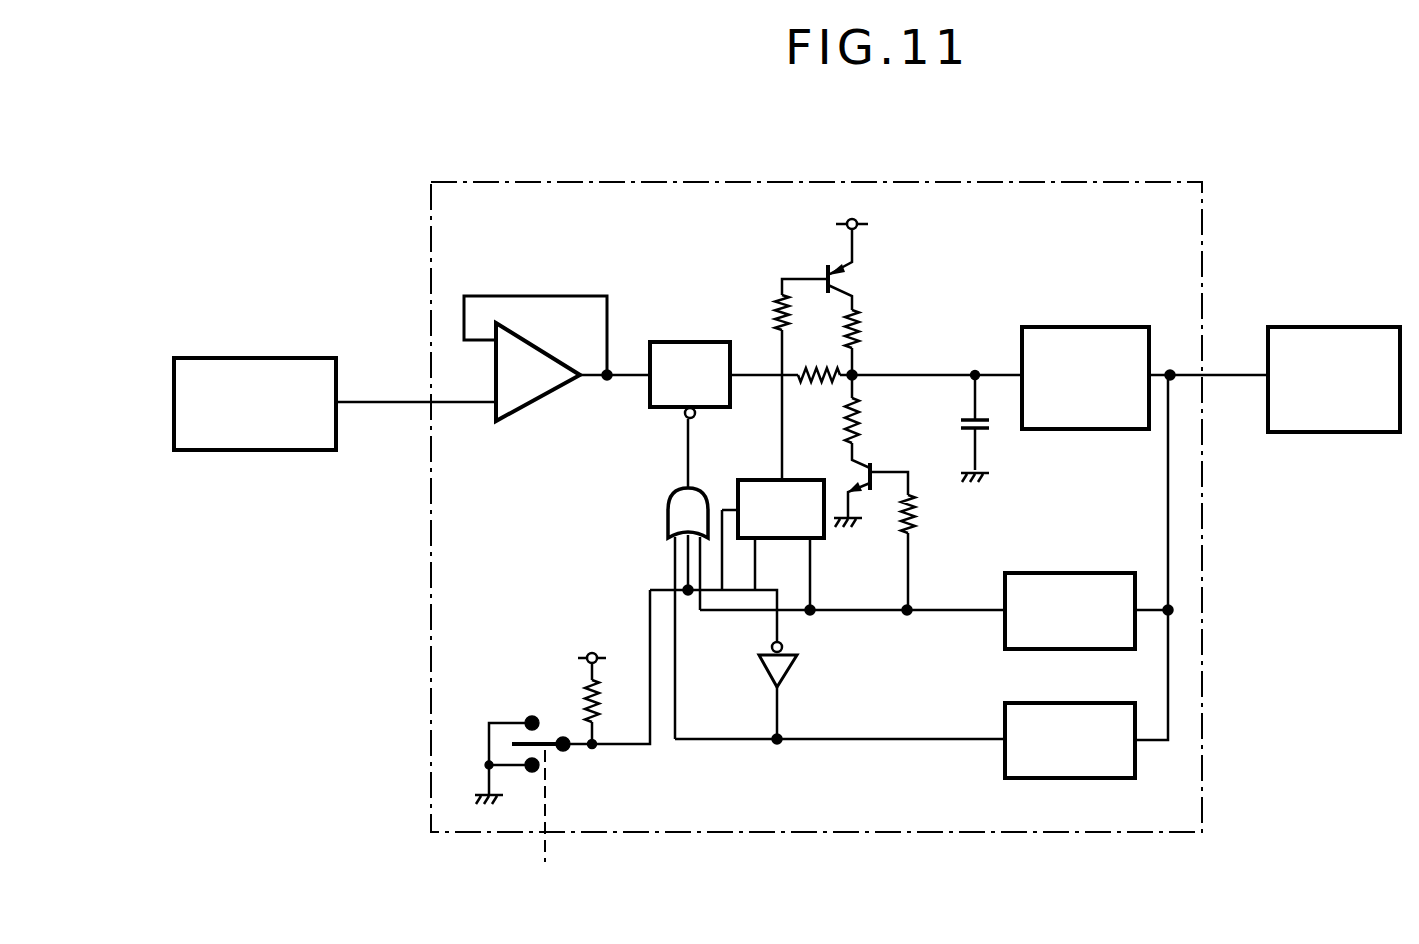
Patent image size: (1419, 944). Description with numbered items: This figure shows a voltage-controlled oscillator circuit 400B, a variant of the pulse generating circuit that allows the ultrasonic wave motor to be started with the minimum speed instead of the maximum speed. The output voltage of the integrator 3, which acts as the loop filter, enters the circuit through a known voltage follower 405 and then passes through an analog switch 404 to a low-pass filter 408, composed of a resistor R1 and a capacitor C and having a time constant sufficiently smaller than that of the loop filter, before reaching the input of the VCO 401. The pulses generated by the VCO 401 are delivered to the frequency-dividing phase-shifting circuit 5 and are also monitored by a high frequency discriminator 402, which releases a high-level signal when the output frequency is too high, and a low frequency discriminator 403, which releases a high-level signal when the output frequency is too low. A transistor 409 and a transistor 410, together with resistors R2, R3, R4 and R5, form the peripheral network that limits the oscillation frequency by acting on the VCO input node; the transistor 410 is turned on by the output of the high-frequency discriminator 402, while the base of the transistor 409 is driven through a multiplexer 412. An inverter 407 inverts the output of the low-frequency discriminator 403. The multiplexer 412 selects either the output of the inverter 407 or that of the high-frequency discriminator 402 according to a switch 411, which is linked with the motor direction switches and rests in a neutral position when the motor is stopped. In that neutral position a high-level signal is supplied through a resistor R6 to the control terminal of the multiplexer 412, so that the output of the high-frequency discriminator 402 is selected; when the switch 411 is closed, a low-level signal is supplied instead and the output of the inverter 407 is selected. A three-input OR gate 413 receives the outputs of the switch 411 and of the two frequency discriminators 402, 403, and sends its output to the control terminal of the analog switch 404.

The integrator 3 is at (255, 357).
The frequency-dividing phase-shifting circuit 5 is at (1350, 327).
The voltage-controlled oscillator circuit 400B is at (888, 182).
The VCO 401 is at (1093, 327).
The high frequency discriminator 402 is at (1040, 652).
The low frequency discriminator 403 is at (1040, 780).
The analog switch 404 is at (690, 342).
The voltage follower 405 is at (485, 418).
The inverter 407 is at (797, 673).
The low-pass filter 408 is at (975, 366).
The transistor 409 is at (852, 277).
The transistor 410 is at (878, 497).
The switch 411 is at (552, 753).
The multiplexer 412 is at (808, 468).
The 3-input OR gate 413 is at (668, 512).
The resistor R1 is at (808, 388).
The resistor R2 is at (765, 322).
The resistor R3 is at (858, 332).
The resistor R4 is at (922, 514).
The resistor R5 is at (862, 424).
The resistor R6 is at (573, 705).
The capacitor C is at (992, 430).